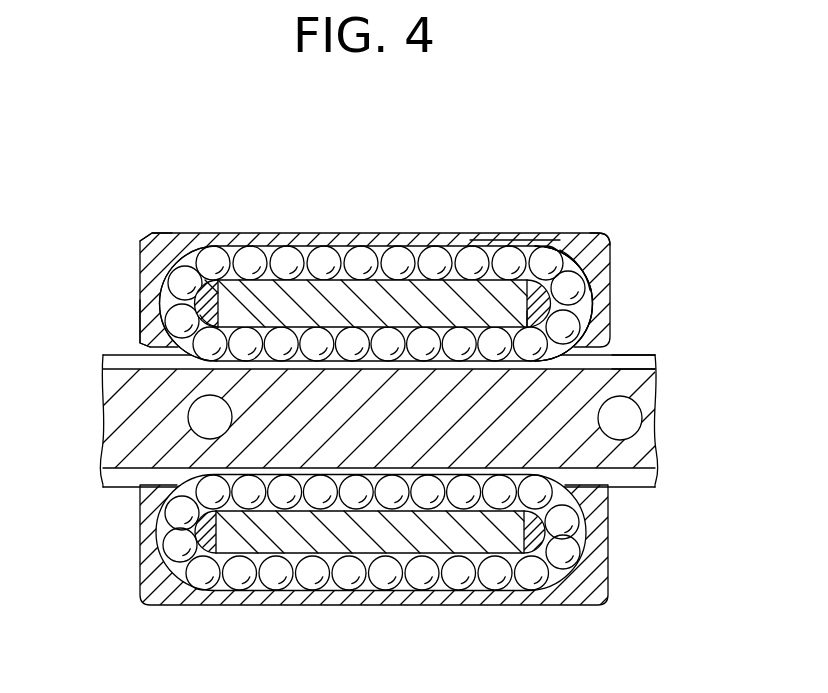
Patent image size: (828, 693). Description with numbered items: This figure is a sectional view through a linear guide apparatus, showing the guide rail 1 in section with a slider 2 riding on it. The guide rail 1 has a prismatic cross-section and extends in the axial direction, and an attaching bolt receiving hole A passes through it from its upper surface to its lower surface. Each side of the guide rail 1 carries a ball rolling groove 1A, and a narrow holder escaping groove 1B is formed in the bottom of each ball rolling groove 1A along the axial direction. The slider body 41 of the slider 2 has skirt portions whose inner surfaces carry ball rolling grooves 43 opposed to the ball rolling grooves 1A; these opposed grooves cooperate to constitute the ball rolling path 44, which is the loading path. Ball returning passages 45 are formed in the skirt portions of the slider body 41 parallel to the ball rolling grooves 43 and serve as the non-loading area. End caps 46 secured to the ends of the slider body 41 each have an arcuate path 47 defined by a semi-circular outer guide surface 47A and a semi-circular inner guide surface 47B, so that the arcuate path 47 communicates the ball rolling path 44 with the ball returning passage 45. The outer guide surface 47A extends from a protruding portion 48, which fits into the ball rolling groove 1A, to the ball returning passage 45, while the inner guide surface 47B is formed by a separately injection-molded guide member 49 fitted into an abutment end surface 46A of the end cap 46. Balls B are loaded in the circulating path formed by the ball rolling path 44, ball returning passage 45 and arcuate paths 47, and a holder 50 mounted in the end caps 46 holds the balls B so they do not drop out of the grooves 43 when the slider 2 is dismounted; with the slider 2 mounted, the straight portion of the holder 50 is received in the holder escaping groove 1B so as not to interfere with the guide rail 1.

The guide rail 1 is at (379, 381).
The ball rolling groove 1A is at (640, 351).
The holder escaping groove 1B is at (643, 366).
The slider 2 is at (423, 610).
The slider body 41 is at (263, 232).
The ball rolling groove 43 is at (369, 296).
The ball rolling path 44 is at (693, 235).
The ball returning passage 45 is at (457, 247).
The end cap 46 is at (158, 240).
The abutment end surface 46A is at (518, 238).
The arcuate path 47 is at (163, 258).
The outer guide surface 47A is at (165, 298).
The inner guide surface 47B is at (170, 322).
The protruding portion 48 is at (150, 332).
The guide member 49 is at (190, 256).
The holder 50 is at (590, 238).
The attaching bolt receiving hole A is at (627, 423).
The balls B is at (332, 247).